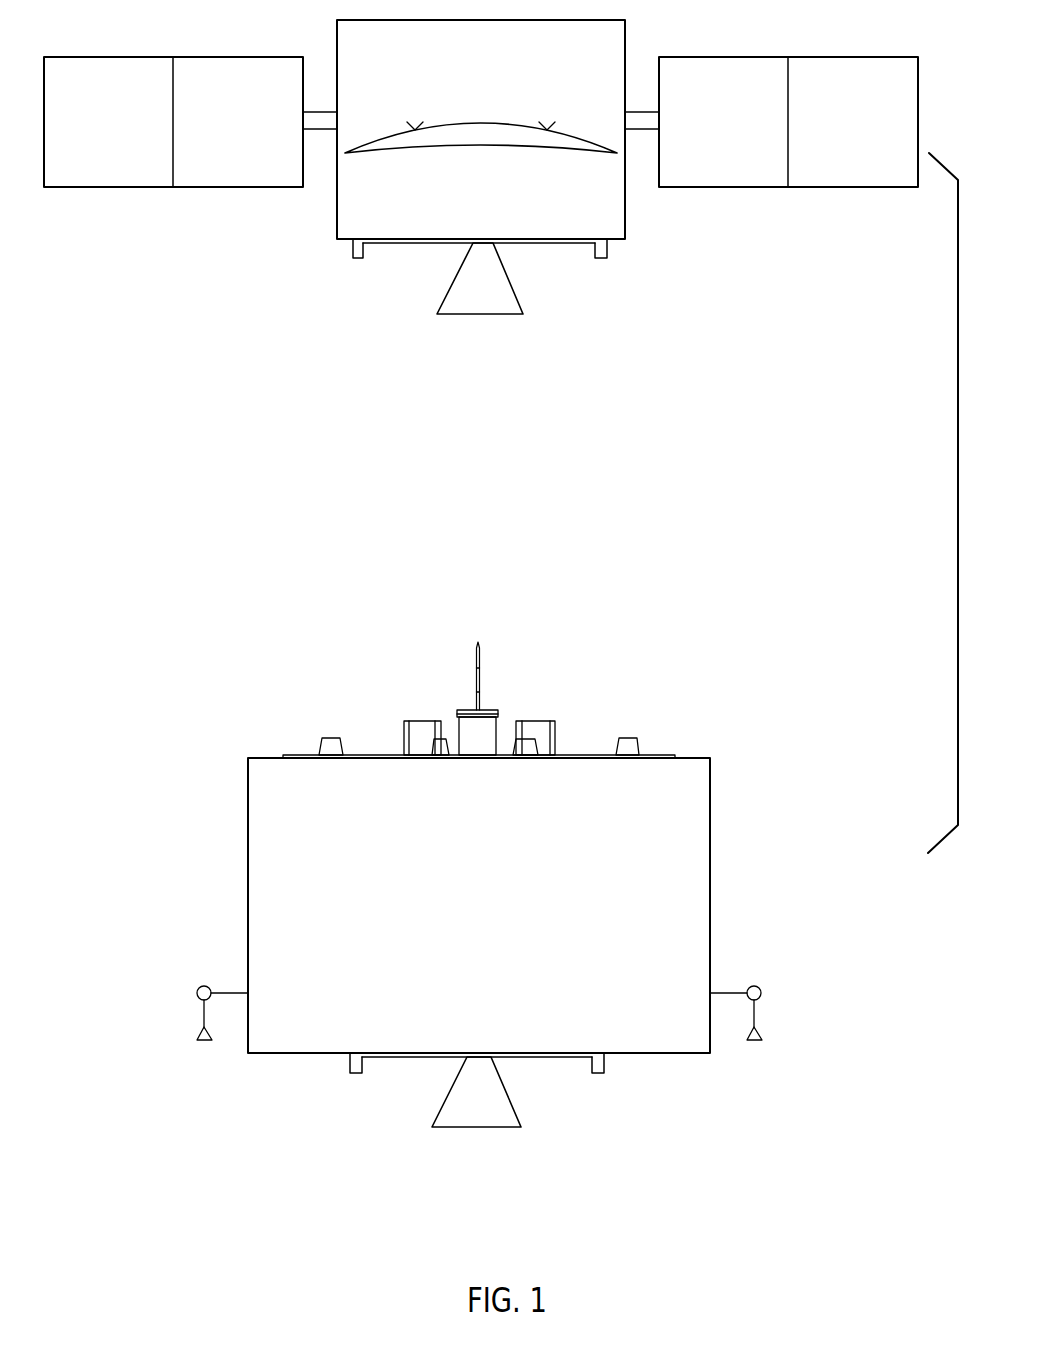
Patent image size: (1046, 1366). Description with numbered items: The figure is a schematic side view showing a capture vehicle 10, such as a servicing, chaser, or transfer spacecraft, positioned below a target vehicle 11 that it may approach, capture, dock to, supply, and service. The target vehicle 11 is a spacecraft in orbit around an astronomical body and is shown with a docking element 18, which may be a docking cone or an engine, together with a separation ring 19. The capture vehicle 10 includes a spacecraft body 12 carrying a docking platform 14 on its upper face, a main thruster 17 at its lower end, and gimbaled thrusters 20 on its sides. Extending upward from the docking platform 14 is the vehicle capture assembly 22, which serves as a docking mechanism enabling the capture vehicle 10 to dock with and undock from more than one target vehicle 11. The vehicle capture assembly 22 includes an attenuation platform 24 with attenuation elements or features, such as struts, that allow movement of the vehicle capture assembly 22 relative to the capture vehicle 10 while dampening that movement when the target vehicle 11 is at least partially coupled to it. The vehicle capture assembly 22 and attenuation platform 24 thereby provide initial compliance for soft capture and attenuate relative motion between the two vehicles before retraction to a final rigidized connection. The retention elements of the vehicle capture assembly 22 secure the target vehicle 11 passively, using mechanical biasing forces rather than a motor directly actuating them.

The capture vehicle 10 is at (697, 592).
The target vehicle 11 is at (613, 220).
The spacecraft body 12 is at (677, 892).
The docking platform 14 is at (300, 755).
The main thruster 17 is at (503, 1115).
The docking element 18 is at (508, 299).
The separation ring 19 is at (603, 260).
The gimbaled thrusters 20 is at (202, 1022).
The vehicle capture assembly 22 is at (476, 650).
The attenuation platform 24 is at (470, 710).